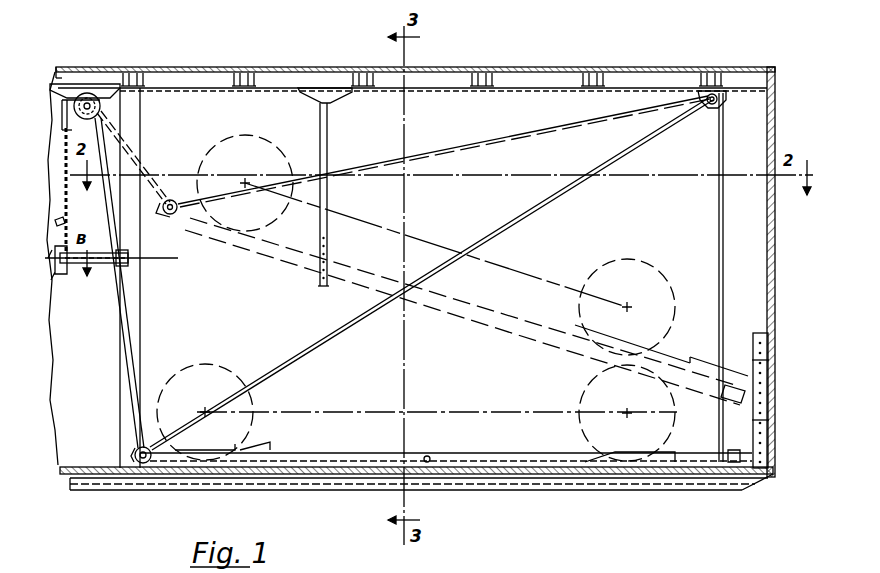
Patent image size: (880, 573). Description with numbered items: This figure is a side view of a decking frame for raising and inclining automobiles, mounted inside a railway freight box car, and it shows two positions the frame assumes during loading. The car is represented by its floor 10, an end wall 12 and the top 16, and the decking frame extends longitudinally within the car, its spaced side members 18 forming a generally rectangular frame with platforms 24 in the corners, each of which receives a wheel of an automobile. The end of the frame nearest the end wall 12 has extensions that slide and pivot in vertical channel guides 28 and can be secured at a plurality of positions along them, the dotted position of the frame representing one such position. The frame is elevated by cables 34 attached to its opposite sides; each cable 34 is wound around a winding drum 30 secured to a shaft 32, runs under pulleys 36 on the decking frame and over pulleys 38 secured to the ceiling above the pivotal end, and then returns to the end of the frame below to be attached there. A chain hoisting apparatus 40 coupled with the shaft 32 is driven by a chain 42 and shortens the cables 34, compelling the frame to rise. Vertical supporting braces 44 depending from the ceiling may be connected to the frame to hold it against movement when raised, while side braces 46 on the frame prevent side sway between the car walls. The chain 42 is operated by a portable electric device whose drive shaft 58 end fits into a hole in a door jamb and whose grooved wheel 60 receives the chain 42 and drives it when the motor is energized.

The floor 10 is at (538, 468).
The end wall 12 is at (766, 241).
The top 16 is at (529, 73).
The side members 18 is at (520, 322).
The platforms 24 is at (265, 455).
The vertical channel guides 28 is at (753, 345).
The winding drum 30 is at (82, 96).
The shaft 32 is at (100, 106).
The cables 34 is at (495, 235).
The pulleys 36 is at (156, 441).
The pulleys 38 is at (704, 108).
The chain hoisting apparatus 40 is at (103, 113).
The chain 42 is at (74, 190).
The vertical supporting braces 44 is at (327, 152).
The side braces 46 is at (441, 443).
The drive shaft 58 is at (130, 270).
The grooved wheel 60 is at (68, 272).